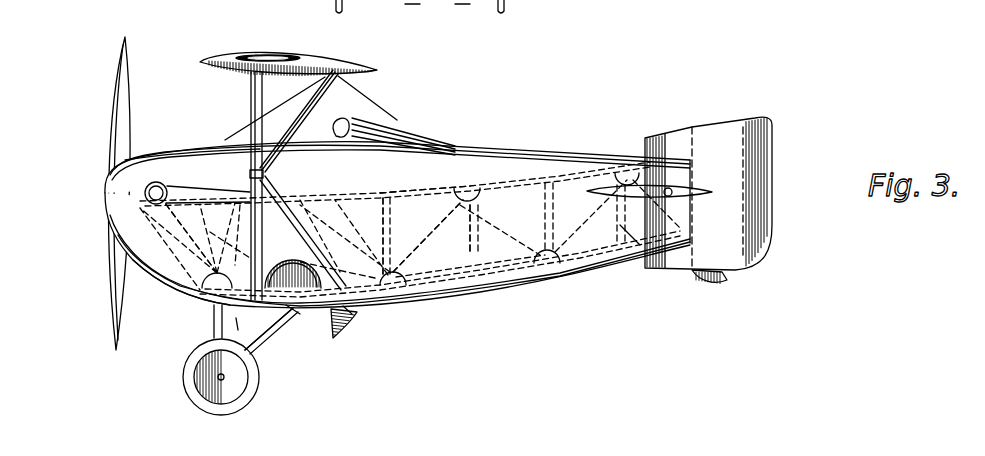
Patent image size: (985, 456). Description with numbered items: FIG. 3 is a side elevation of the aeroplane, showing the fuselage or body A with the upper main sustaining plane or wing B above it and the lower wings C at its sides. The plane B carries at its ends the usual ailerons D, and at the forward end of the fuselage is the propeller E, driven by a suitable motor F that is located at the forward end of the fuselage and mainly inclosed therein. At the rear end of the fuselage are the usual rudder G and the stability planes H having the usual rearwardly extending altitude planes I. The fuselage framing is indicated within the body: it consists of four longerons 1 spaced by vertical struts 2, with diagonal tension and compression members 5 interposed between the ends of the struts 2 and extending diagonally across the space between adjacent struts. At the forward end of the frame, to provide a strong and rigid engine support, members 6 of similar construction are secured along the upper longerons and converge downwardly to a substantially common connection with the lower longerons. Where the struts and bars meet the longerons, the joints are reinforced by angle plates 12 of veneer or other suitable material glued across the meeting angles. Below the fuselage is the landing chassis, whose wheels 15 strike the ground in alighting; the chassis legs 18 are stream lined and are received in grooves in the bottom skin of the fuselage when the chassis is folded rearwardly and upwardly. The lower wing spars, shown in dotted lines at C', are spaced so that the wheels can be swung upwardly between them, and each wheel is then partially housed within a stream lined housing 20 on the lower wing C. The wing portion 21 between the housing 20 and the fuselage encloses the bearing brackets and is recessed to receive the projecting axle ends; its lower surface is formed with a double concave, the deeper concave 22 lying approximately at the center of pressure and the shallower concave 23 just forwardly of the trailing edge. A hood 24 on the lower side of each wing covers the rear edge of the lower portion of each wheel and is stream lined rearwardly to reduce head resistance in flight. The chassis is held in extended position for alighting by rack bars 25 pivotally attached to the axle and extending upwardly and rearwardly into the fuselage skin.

The fuselage A is at (483, 160).
The upper main sustaining plane B is at (224, 56).
The lower wing C is at (181, 288).
The wing spar C' is at (299, 353).
The aileron D is at (262, 60).
The propeller E is at (113, 250).
The motor F is at (156, 182).
The rudder G is at (690, 166).
The stability plane H is at (615, 228).
The altitude plane I is at (697, 196).
The longeron 1 is at (440, 185).
The vertical strut 2 is at (462, 251).
The diagonal tension and compression member 5 is at (427, 236).
The converging member 6 is at (191, 238).
The angle plate 12 is at (389, 223).
The wheel 15 is at (258, 402).
The leg 18 is at (213, 322).
The housing 20 is at (292, 260).
The wing portion 21 is at (290, 309).
The concave 22 is at (278, 323).
The concave 23 is at (350, 314).
The hood 24 is at (343, 336).
The rack bar 25 is at (263, 347).